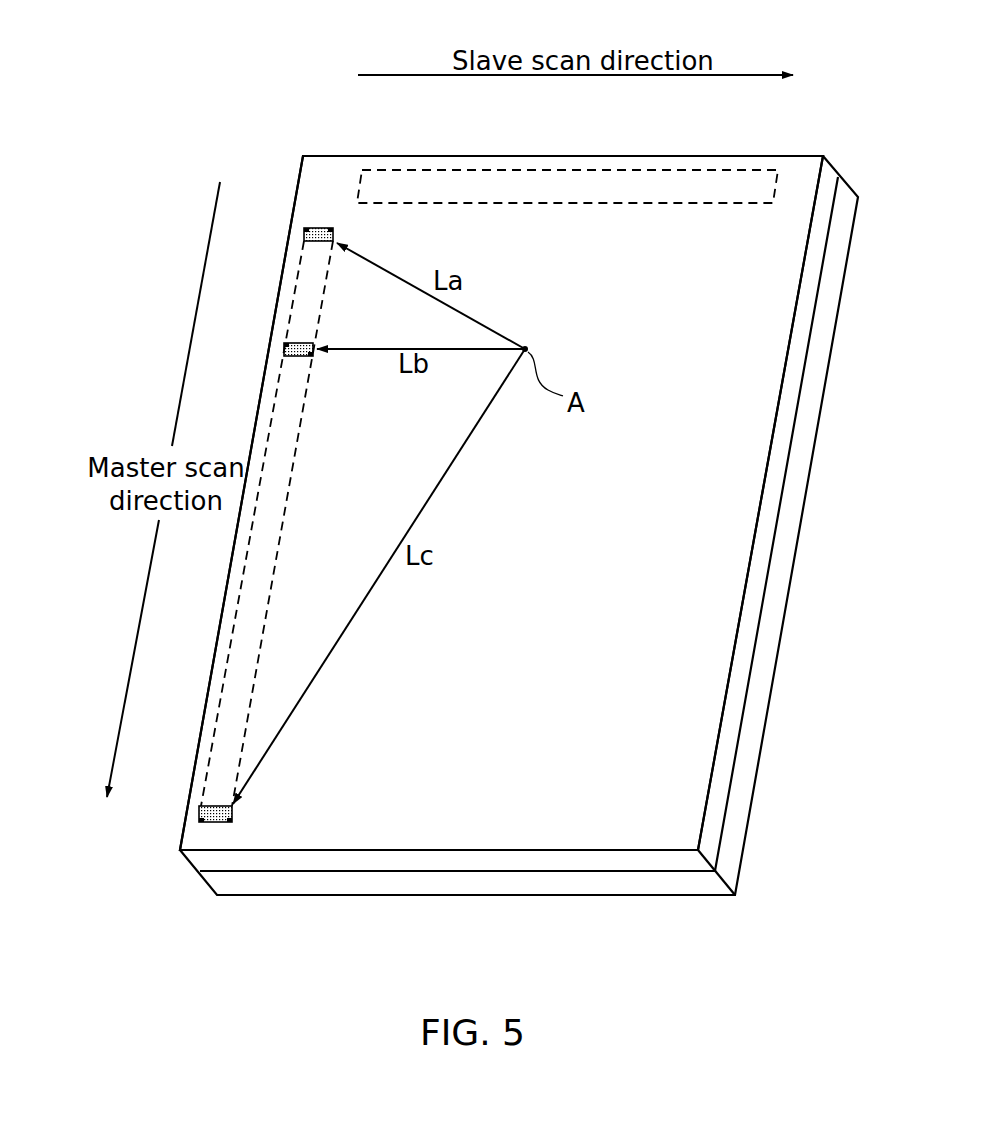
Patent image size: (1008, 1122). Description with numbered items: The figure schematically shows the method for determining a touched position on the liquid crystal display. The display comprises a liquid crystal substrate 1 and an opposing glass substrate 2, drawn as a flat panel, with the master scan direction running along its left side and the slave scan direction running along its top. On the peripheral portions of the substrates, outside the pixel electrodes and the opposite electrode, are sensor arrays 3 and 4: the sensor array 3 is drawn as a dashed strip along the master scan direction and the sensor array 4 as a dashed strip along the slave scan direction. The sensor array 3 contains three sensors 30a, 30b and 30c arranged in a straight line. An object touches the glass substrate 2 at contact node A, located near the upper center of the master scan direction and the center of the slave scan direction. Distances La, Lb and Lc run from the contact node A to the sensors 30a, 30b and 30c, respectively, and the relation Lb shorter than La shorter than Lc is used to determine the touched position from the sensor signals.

The liquid crystal substrate 1 is at (848, 200).
The glass substrate 2 is at (799, 178).
The sensor array 3 is at (230, 705).
The sensor array 4 is at (466, 177).
The sensor 30a is at (300, 227).
The sensor 30b is at (280, 342).
The sensor 30c is at (195, 803).